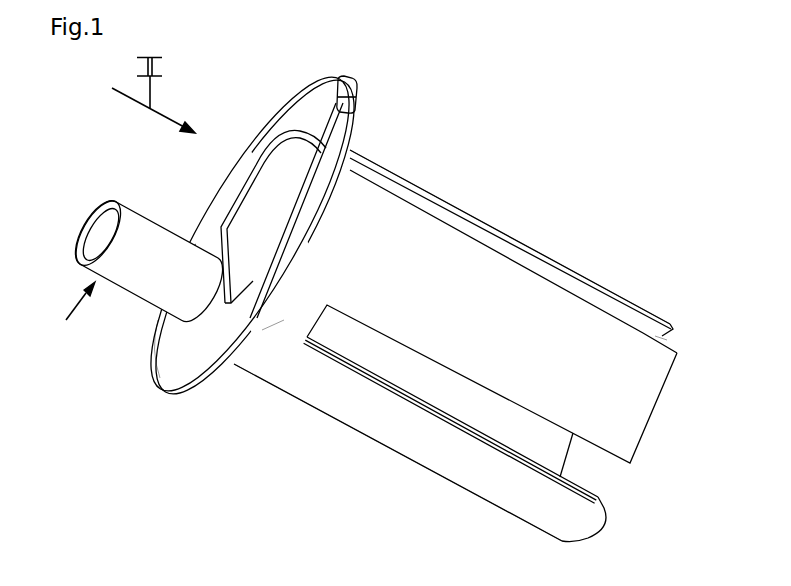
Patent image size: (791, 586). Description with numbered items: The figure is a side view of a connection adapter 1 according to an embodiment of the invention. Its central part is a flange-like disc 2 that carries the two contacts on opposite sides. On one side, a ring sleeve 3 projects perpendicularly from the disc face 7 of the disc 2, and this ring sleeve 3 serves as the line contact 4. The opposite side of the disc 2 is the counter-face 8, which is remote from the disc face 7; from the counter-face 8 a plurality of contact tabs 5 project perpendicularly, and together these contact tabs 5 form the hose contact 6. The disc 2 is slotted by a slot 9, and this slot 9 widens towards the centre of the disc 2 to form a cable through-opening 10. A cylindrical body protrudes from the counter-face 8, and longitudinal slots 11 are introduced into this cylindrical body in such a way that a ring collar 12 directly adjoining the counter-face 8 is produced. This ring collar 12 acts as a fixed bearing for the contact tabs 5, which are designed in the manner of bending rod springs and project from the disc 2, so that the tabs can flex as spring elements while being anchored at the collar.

The connection adapter 1 is at (456, 191).
The disc 2 is at (212, 356).
The ring sleeve 3 is at (146, 240).
The line contact 4 is at (75, 307).
The contact tabs 5 is at (627, 297).
The hose contact 6 is at (577, 262).
The disc face 7 is at (168, 360).
The counter-face 8 is at (353, 90).
The slot 9 is at (348, 108).
The cable through-opening 10 is at (262, 195).
The longitudinal slots 11 is at (597, 469).
The ring collar 12 is at (275, 332).